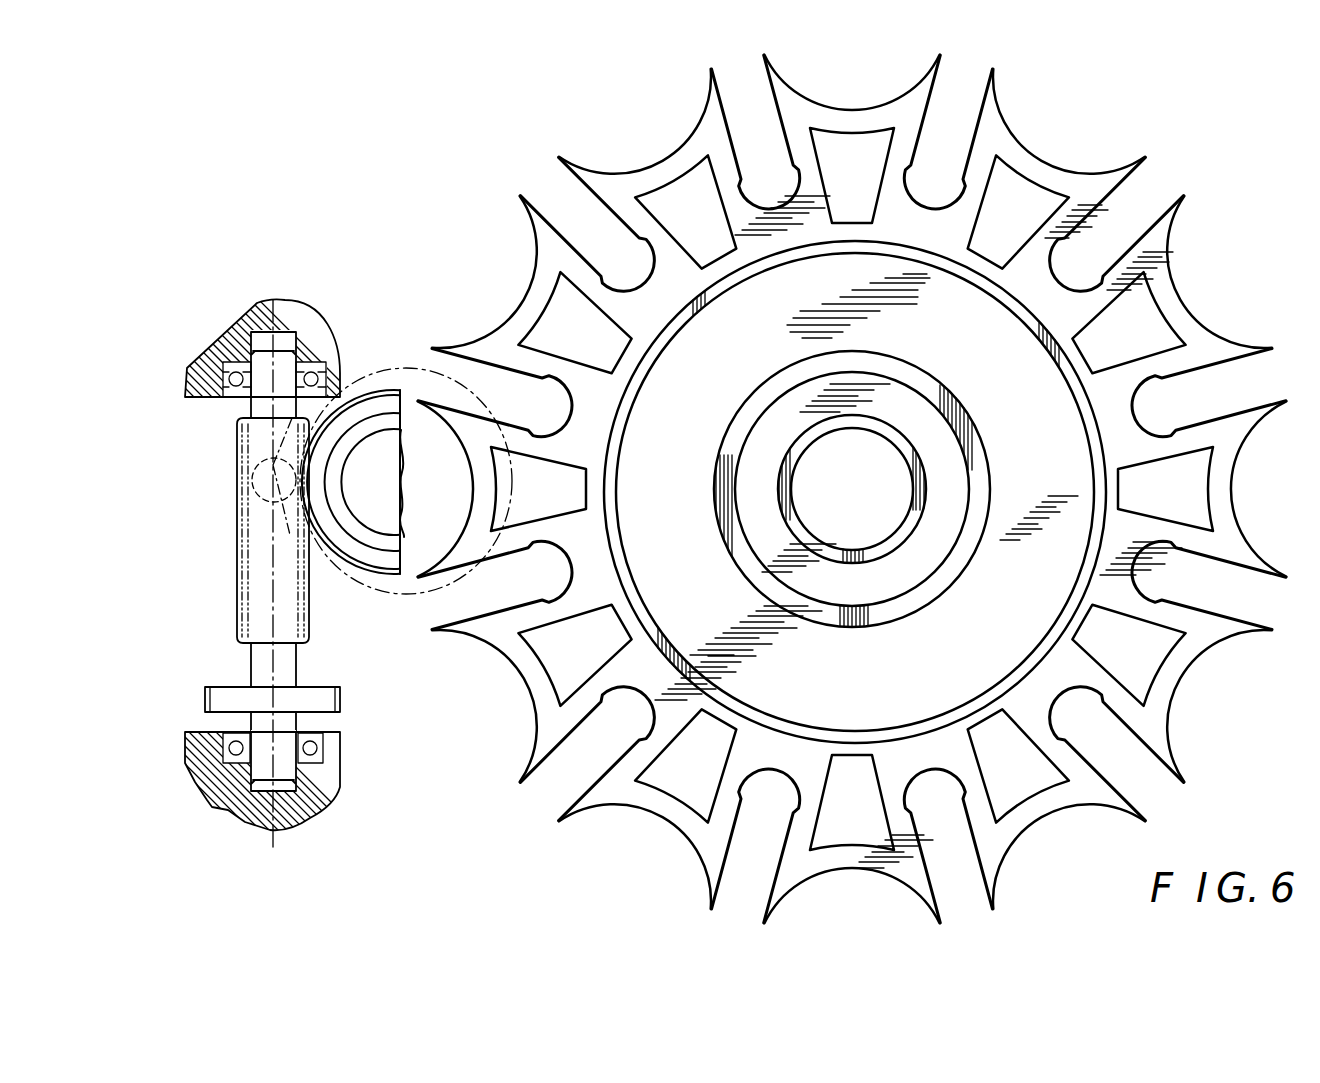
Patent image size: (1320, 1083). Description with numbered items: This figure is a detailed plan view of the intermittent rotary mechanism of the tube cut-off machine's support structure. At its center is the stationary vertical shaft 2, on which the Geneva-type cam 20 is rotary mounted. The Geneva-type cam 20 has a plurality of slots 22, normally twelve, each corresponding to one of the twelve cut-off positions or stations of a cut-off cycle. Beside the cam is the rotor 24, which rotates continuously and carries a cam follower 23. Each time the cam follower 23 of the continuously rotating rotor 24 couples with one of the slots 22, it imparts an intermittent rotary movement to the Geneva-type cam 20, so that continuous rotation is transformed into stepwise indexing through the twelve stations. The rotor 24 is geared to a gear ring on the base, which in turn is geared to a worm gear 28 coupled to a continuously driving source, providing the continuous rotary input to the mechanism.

The stationary vertical shaft 2 is at (923, 493).
The Geneva-type cam 20 is at (513, 770).
The slots 22 is at (548, 787).
The cam follower 23 is at (251, 464).
The rotor 24 is at (394, 390).
The worm gear 28 is at (243, 582).